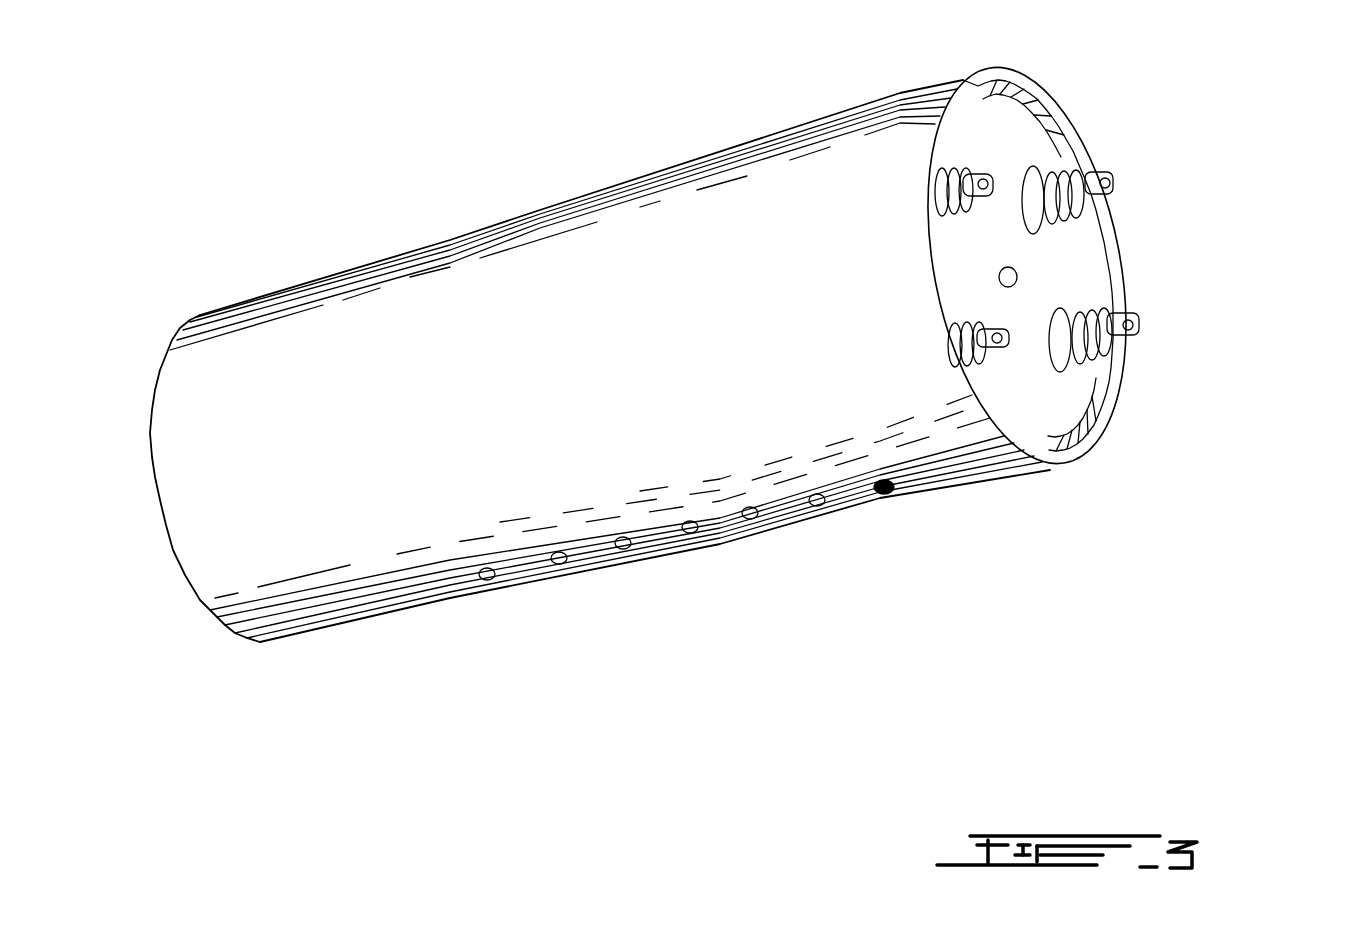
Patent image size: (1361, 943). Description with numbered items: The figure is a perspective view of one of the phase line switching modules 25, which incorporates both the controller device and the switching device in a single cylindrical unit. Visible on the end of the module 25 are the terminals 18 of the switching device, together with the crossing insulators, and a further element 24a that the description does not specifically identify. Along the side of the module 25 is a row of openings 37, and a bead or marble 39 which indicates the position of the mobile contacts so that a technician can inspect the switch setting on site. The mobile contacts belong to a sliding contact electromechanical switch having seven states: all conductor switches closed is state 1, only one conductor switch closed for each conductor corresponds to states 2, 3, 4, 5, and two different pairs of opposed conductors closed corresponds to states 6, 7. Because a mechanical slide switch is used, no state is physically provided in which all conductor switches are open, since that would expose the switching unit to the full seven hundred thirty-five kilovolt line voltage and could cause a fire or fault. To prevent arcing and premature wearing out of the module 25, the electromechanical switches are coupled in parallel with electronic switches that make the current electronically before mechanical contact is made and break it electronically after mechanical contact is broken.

The phase line switching module 25 is at (653, 346).
The terminal 18 is at (1094, 317).
The fill cap 24a is at (1108, 250).
The opening 37 is at (634, 609).
The bead or marble 39 is at (911, 558).
The all-closed switch state 1 is at (882, 475).
The single-conductor-closed switch state 2 is at (814, 487).
The single-conductor-closed switch state 3 is at (749, 499).
The single-conductor-closed switch state 4 is at (689, 513).
The single-conductor-closed switch state 5 is at (622, 528).
The opposed-pair-closed switch state 6 is at (558, 542).
The opposed-pair-closed switch state 7 is at (487, 558).